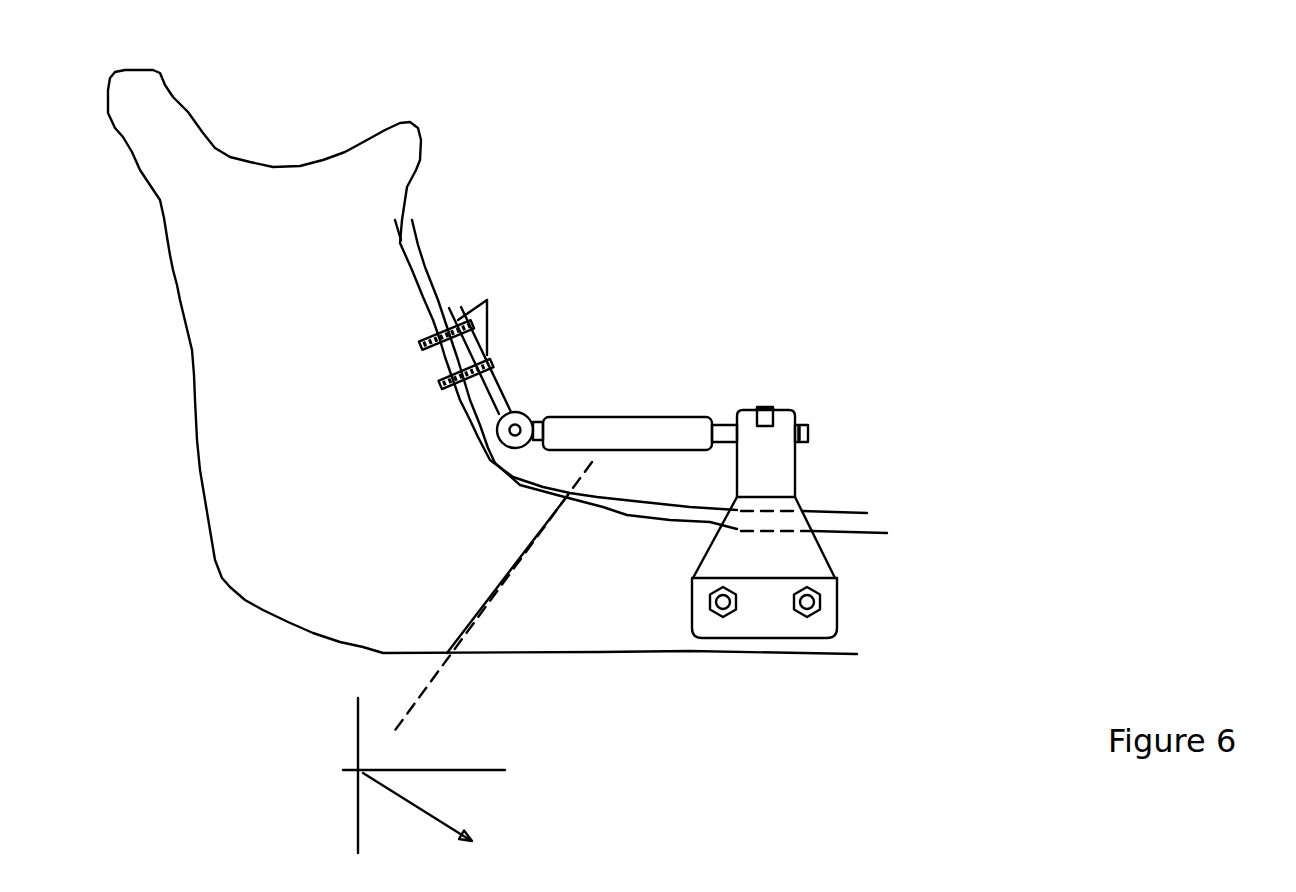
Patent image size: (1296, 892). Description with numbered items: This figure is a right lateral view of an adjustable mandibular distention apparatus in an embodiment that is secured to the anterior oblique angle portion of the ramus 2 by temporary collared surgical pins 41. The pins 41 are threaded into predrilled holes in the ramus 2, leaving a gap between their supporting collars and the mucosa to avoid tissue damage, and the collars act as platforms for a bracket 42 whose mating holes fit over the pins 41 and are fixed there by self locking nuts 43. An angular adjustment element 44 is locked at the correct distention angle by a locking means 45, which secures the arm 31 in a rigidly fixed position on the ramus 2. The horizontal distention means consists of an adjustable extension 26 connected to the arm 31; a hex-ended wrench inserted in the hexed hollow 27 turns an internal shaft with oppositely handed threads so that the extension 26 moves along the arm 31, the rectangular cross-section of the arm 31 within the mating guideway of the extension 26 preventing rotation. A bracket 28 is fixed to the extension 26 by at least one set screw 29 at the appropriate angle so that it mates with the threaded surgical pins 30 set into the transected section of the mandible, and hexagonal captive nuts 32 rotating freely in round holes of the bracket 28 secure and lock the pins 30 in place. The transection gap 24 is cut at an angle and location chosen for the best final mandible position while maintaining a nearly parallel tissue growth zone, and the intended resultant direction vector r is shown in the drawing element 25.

The ramus 2 is at (150, 70).
The transection gap 24 is at (482, 608).
The resultant direction vector drawing element 25 is at (343, 768).
The adjustable extension 26 is at (663, 415).
The hexed hollow 27 is at (807, 440).
The bracket 28 is at (795, 412).
The set screw 29 is at (765, 407).
The threaded surgical pins 30 is at (737, 617).
The arm 31 is at (541, 428).
The hexagonal captive nut 32 is at (723, 613).
The pins 41 is at (448, 335).
The bracket 42 is at (493, 390).
The self locking nuts 43 is at (487, 300).
The angular adjustment element 44 is at (516, 412).
The locking means 45 is at (519, 426).